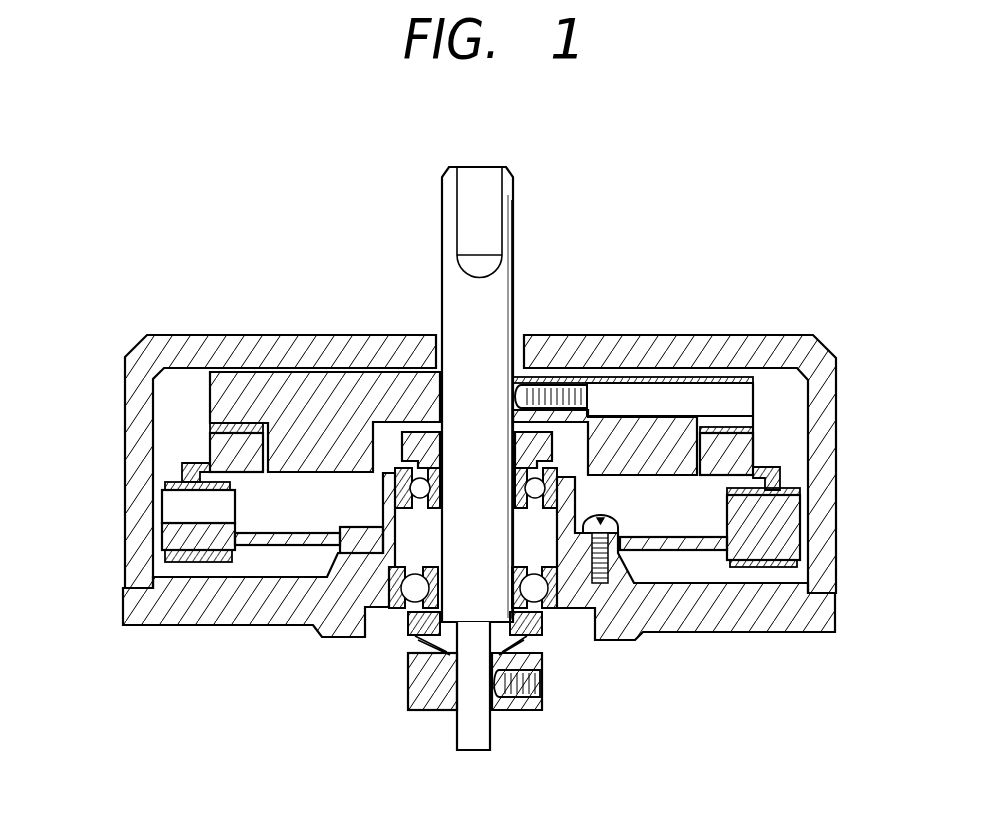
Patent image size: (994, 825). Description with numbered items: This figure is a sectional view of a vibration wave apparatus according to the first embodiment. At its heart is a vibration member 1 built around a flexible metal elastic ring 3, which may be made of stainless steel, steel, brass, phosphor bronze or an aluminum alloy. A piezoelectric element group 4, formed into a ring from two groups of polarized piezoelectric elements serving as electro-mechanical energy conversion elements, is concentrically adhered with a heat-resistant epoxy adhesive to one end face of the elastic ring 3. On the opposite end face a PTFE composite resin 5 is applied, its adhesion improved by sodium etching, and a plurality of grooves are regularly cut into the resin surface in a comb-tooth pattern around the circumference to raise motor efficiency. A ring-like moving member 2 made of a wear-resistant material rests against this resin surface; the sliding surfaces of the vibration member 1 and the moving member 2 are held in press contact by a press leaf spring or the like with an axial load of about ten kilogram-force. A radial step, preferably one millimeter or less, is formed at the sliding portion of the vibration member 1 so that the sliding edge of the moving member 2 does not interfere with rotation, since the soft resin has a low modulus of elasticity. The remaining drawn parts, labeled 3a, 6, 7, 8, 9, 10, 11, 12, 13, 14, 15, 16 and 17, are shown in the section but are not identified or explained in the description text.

The vibration member 1 is at (543, 538).
The moving member 2 is at (553, 419).
The elastic ring 3 is at (785, 520).
The magnet portion 3a is at (160, 497).
The piezoelectric element group 4 is at (800, 568).
The PTFE composite resin 5 is at (525, 501).
The stator core 6 is at (760, 468).
The insulating plate 7 is at (753, 431).
The coil 8 is at (703, 415).
The bearing 9 is at (400, 478).
The screw 10 is at (605, 518).
The spring 11 is at (598, 388).
The shaft 12 is at (505, 278).
The housing 13 is at (740, 340).
The bearing holder 14 is at (418, 434).
The washer 15 is at (545, 632).
The spring retainer 16 is at (535, 650).
The collar 17 is at (420, 712).